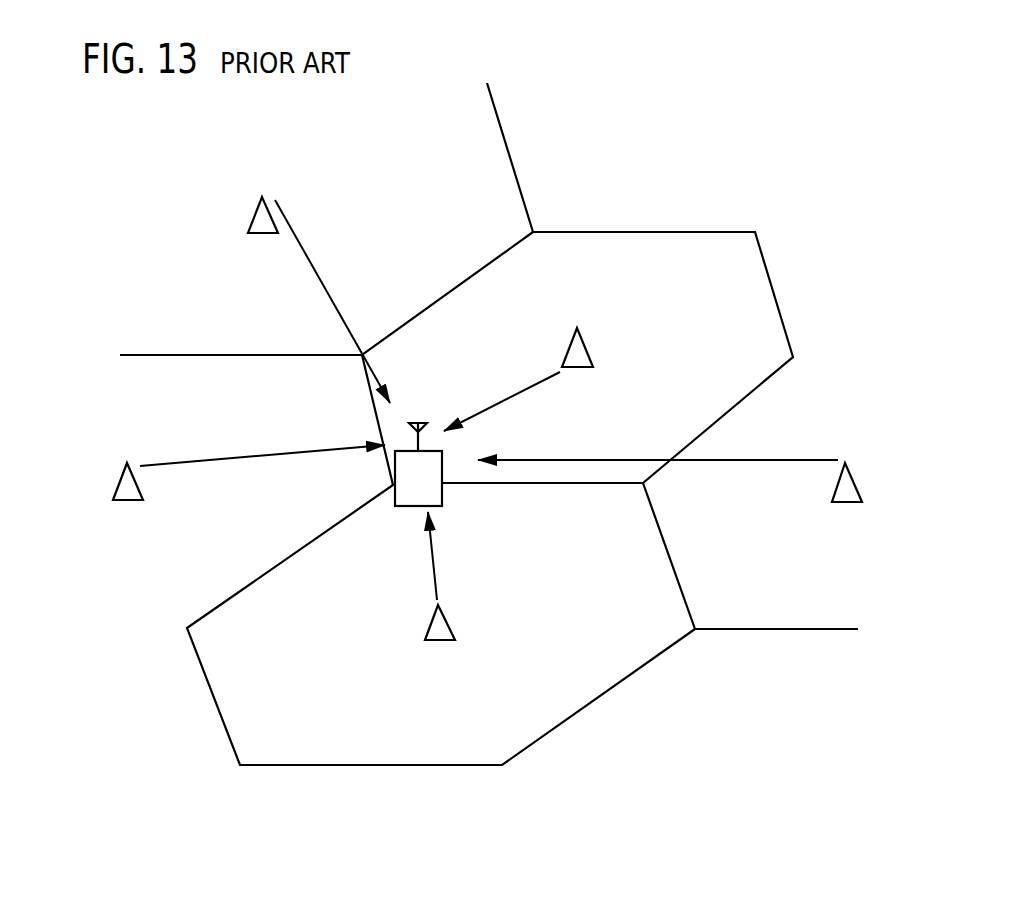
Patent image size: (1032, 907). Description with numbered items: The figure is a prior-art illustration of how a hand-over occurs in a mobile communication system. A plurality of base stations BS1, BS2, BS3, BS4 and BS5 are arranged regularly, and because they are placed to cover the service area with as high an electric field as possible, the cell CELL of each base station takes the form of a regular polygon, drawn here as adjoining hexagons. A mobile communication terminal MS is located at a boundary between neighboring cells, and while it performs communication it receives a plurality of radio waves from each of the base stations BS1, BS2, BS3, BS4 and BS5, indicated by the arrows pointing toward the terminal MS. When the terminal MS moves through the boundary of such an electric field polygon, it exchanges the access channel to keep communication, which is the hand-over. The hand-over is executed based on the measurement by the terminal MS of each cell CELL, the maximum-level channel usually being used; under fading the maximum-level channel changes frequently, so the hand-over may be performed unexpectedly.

The base station BS1 is at (246, 493).
The base station BS2 is at (286, 300).
The base station BS3 is at (544, 379).
The base station BS4 is at (442, 600).
The base station BS5 is at (677, 501).
The mobile communication terminal MS is at (418, 464).
The cell CELL is at (605, 672).